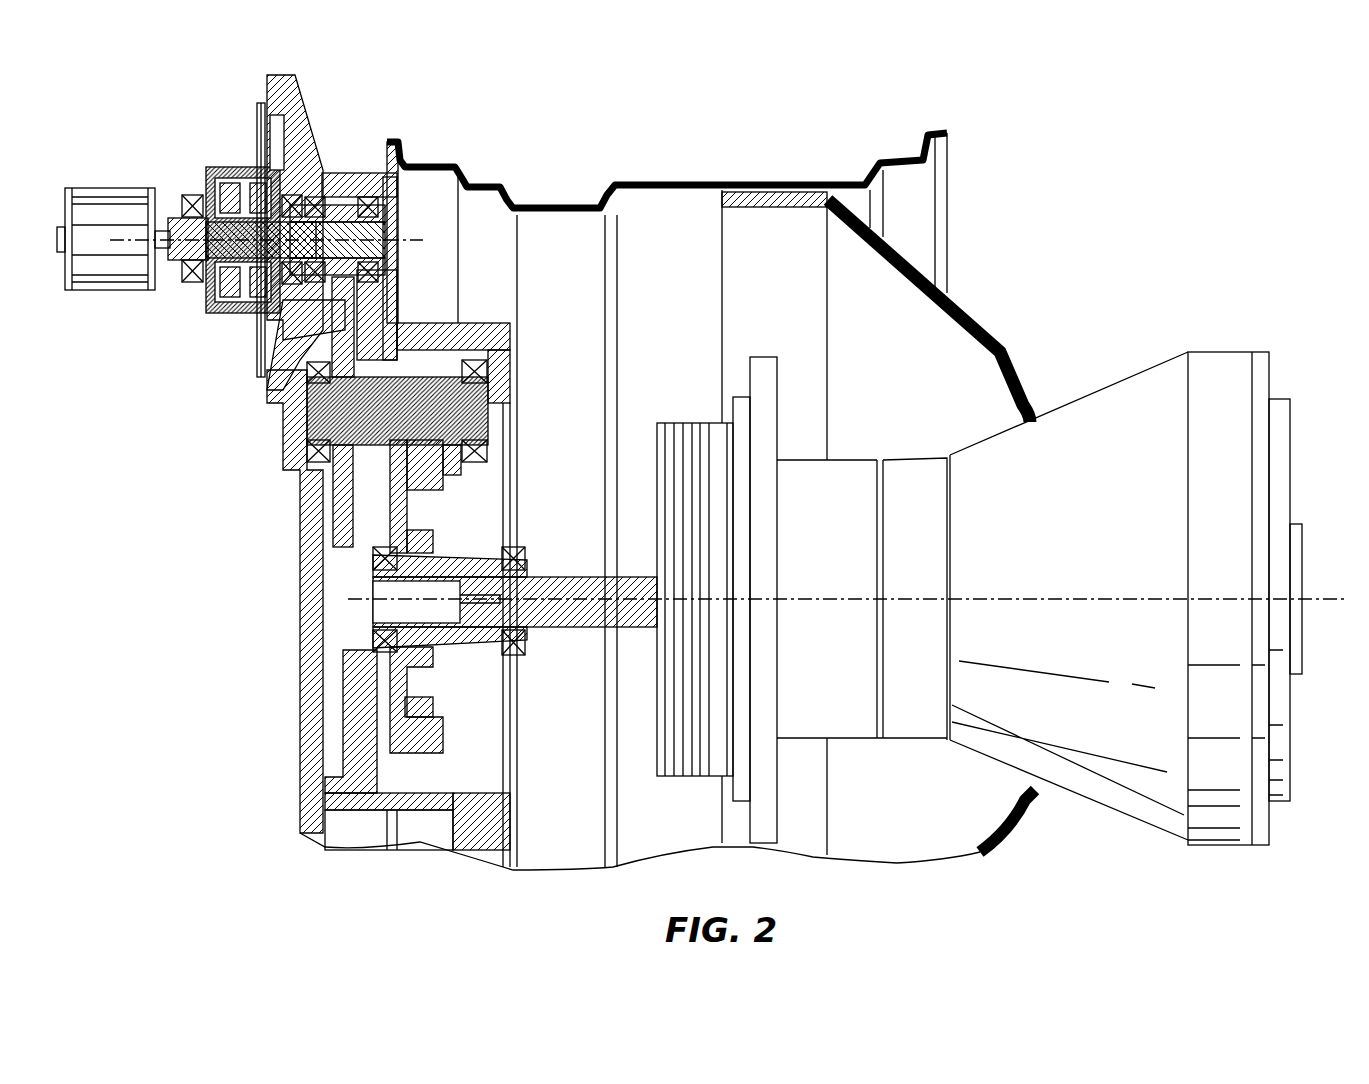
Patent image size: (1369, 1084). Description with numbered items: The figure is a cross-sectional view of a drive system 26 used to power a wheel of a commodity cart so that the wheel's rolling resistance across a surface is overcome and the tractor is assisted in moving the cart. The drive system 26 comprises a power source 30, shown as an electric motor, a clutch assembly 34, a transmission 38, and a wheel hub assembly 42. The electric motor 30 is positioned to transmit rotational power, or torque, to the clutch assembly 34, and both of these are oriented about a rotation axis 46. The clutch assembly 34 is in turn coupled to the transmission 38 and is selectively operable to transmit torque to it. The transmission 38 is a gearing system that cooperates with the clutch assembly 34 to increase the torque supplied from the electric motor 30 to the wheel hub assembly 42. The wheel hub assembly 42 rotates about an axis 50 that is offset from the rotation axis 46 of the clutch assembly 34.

The drive system 26 is at (1138, 128).
The power source 30 is at (118, 188).
The clutch assembly 34 is at (211, 166).
The transmission 38 is at (533, 463).
The wheel hub assembly 42 is at (1085, 337).
The rotation axis 46 is at (407, 227).
The axis 50 is at (1325, 601).